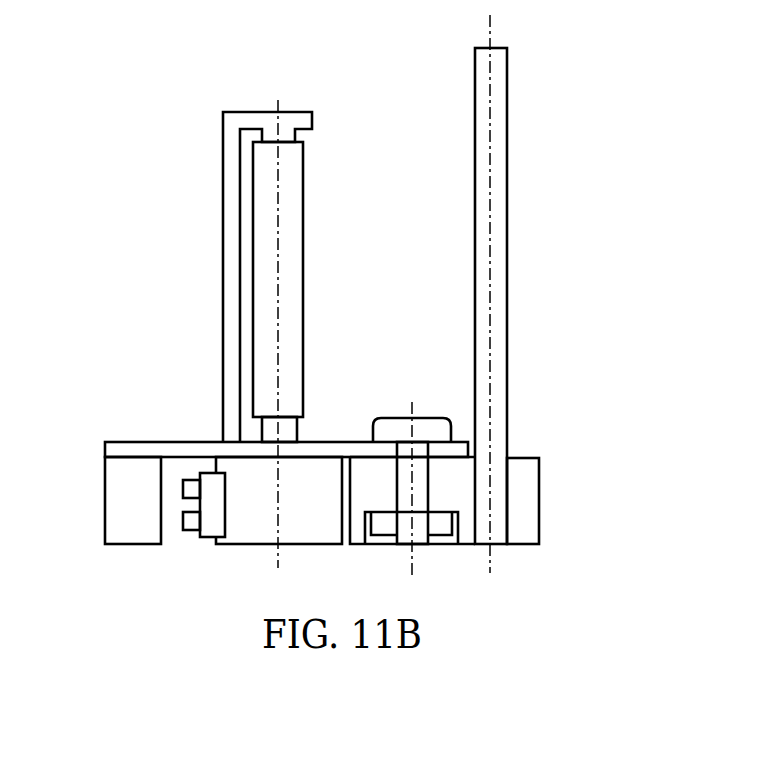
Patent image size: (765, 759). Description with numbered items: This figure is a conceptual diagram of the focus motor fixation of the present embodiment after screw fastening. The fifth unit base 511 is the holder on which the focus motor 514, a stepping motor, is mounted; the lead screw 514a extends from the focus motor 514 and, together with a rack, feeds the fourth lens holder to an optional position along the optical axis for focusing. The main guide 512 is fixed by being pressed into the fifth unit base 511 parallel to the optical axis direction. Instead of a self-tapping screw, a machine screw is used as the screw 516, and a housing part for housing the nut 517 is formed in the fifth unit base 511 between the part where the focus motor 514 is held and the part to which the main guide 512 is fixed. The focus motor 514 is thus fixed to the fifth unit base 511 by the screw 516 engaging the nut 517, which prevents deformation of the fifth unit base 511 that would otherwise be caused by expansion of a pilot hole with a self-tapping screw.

The fifth unit base 511 is at (526, 500).
The main guide 512 is at (500, 271).
The focus motor 514 is at (254, 500).
The lead screw 514a is at (270, 326).
The screw 516 is at (443, 430).
The nut 517 is at (440, 525).